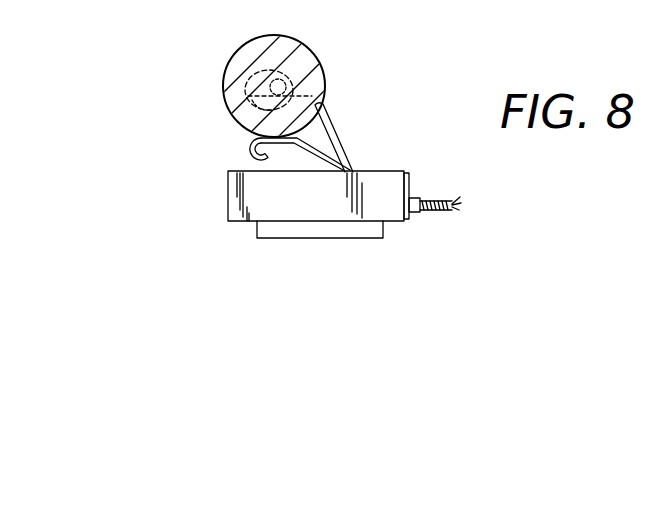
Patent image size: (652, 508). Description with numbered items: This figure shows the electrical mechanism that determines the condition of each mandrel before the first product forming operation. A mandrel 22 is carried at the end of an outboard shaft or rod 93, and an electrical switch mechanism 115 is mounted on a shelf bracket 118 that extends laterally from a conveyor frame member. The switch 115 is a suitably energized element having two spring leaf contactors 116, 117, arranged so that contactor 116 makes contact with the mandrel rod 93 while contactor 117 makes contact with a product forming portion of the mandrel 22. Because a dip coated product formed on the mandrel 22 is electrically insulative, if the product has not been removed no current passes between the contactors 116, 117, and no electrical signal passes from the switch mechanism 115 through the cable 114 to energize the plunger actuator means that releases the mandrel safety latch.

The mandrel 22 is at (324, 74).
The outboard shaft or rod 93 is at (298, 60).
The cable 114 is at (432, 197).
The switch mechanism 115 is at (232, 192).
The spring leaf contactor 116 is at (334, 124).
The spring leaf contactor 117 is at (250, 142).
The shelf bracket 118 is at (352, 228).